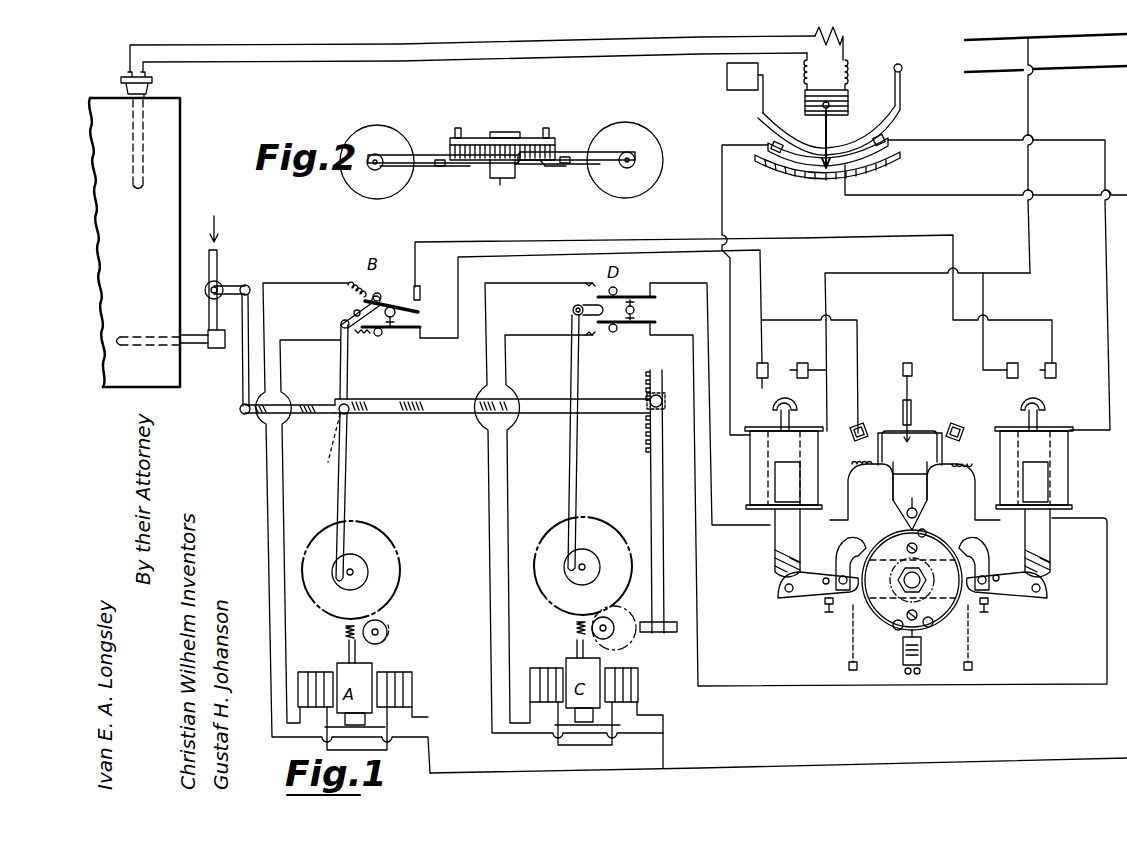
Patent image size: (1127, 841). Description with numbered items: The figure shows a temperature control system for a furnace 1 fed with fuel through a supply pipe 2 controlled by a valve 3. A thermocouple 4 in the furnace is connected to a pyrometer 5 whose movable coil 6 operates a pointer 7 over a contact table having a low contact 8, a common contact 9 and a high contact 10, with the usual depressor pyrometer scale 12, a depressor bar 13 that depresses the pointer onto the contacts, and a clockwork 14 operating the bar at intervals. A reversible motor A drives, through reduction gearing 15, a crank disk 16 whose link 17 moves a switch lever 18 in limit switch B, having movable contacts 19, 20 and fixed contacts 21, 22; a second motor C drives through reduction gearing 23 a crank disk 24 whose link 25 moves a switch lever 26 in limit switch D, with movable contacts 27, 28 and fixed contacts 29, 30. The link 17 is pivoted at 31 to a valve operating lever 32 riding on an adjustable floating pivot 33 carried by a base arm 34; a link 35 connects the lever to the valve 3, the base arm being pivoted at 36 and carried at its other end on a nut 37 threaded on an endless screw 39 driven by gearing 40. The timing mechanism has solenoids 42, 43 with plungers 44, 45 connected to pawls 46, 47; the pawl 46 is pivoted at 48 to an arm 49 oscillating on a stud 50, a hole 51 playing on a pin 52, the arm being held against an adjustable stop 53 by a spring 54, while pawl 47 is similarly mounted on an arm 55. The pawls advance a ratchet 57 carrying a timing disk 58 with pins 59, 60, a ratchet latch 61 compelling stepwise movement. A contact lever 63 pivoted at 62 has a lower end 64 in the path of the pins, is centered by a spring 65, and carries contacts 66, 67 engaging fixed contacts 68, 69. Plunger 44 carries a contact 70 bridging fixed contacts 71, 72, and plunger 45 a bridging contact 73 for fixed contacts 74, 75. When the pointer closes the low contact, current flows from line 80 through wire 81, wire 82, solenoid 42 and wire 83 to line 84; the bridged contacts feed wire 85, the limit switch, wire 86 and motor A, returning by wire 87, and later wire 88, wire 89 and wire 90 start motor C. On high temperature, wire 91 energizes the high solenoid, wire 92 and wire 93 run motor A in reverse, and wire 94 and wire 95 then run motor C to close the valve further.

In FIG. 1, the furnace 1 is at (134, 242).
In FIG. 1, the supply pipe 2 is at (219, 273).
In FIG. 1, the valve 3 is at (219, 283).
In FIG. 1, the thermocouple 4 is at (150, 143).
In FIG. 1, the pyrometer 5 is at (816, 71).
In FIG. 1, the movable coil 6 is at (839, 58).
In FIG. 1, the pointer 7 is at (833, 118).
In FIG. 1, the low contact 8 is at (785, 135).
In FIG. 1, the common contact 9 is at (782, 158).
In FIG. 1, the high contact 10 is at (880, 133).
In FIG. 1, the depressor pyrometer scale 12 is at (900, 160).
In FIG. 1, the depressor bar 13 is at (760, 114).
In FIG. 1, the clockwork 14 is at (742, 76).
In FIG. 1, the reduction gearing 15 is at (382, 626).
In FIG. 1, the crank disk 16 is at (365, 562).
In FIG. 1, the link 17 is at (348, 490).
In FIG. 1, the switch lever 18 is at (356, 308).
In FIG. 1, the movable contact 19 is at (405, 300).
In FIG. 1, the movable contact 20 is at (392, 330).
In FIG. 1, the fixed contact 21 is at (421, 292).
In FIG. 1, the fixed contact 22 is at (422, 334).
In FIG. 1, the reduction gearing 23 is at (576, 630).
In FIG. 1, the crank disk 24 is at (592, 558).
In FIG. 1, the link 25 is at (577, 465).
In FIG. 1, the switch lever 26 is at (574, 308).
In FIG. 1, the movable contact 27 is at (640, 295).
In FIG. 1, the movable contact 28 is at (638, 325).
In FIG. 1, the fixed contact 29 is at (655, 290).
In FIG. 1, the fixed contact 30 is at (655, 328).
In FIG. 1, the pivot 31 is at (350, 415).
In FIG. 1, the valve operating lever 32 is at (408, 416).
In FIG. 1, the adjustable floating pivot 33 is at (506, 415).
In FIG. 1, the base arm 34 is at (552, 402).
In FIG. 1, the link 35 is at (242, 374).
In FIG. 1, the pivot 36 is at (320, 440).
In FIG. 1, the nut 37 is at (660, 397).
In FIG. 1, the endless screw 39 is at (651, 498).
In FIG. 1, the gearing 40 is at (640, 635).
In FIG. 1, the solenoid 42 is at (750, 468).
In FIG. 2, the solenoid 42 is at (350, 145).
In FIG. 1, the solenoid 43 is at (1068, 468).
In FIG. 2, the solenoid 43 is at (650, 140).
In FIG. 1, the plunger 44 is at (775, 549).
In FIG. 2, the plunger 44 is at (368, 168).
In FIG. 1, the plunger 45 is at (1050, 549).
In FIG. 2, the plunger 45 is at (633, 165).
In FIG. 1, the pawl 46 is at (785, 596).
In FIG. 2, the pawl 46 is at (388, 152).
In FIG. 1, the pawl 47 is at (1040, 598).
In FIG. 2, the pawl 47 is at (605, 150).
In FIG. 1, the pivot 48 is at (840, 570).
In FIG. 2, the pivot 48 is at (440, 167).
In FIG. 1, the arm 49 is at (848, 600).
In FIG. 2, the arm 49 is at (464, 165).
In FIG. 1, the stud 50 is at (905, 580).
In FIG. 2, the stud 50 is at (500, 185).
In FIG. 1, the hole 51 is at (830, 590).
In FIG. 1, the pin 52 is at (823, 586).
In FIG. 2, the pin 52 is at (415, 150).
In FIG. 1, the adjustable stop 53 is at (828, 612).
In FIG. 1, the spring 54 is at (851, 645).
In FIG. 1, the arm 55 is at (982, 555).
In FIG. 2, the arm 55 is at (545, 168).
In FIG. 1, the ratchet 57 is at (932, 628).
In FIG. 2, the ratchet 57 is at (470, 140).
In FIG. 1, the timing disk 58 is at (897, 524).
In FIG. 2, the timing disk 58 is at (492, 140).
In FIG. 1, the pin 59 is at (895, 630).
In FIG. 2, the pin 59 is at (457, 134).
In FIG. 1, the pin 60 is at (925, 528).
In FIG. 2, the pin 60 is at (546, 130).
In FIG. 1, the ratchet latch 61 is at (903, 648).
In FIG. 1, the pivot 62 is at (910, 500).
In FIG. 1, the contact lever 63 is at (910, 480).
In FIG. 1, the lower end 64 is at (893, 520).
In FIG. 1, the spring 65 is at (909, 390).
In FIG. 1, the contact 66 is at (882, 432).
In FIG. 1, the contact 67 is at (937, 432).
In FIG. 1, the fixed contact 68 is at (856, 440).
In FIG. 1, the fixed contact 69 is at (957, 440).
In FIG. 1, the contact 70 is at (773, 404).
In FIG. 1, the fixed contact 71 is at (768, 365).
In FIG. 1, the fixed contact 72 is at (795, 365).
In FIG. 1, the bridging contact 73 is at (1045, 404).
In FIG. 1, the fixed contact 74 is at (1018, 368).
In FIG. 1, the fixed contact 75 is at (1056, 376).
In FIG. 1, the line 80 is at (1046, 155).
In FIG. 1, the wire 81 is at (986, 180).
In FIG. 1, the wire 82 is at (722, 216).
In FIG. 1, the wire 83 is at (927, 286).
In FIG. 1, the line 84 is at (965, 40).
In FIG. 1, the wire 85 is at (455, 338).
In FIG. 1, the wire 86 is at (284, 510).
In FIG. 1, the wire 87 is at (778, 759).
In FIG. 1, the wire 88 is at (848, 320).
In FIG. 1, the wire 89 is at (710, 404).
In FIG. 1, the wire 90 is at (490, 615).
In FIG. 1, the wire 91 is at (1107, 258).
In FIG. 1, the wire 92 is at (733, 290).
In FIG. 1, the wire 93 is at (268, 550).
In FIG. 1, the wire 94 is at (695, 578).
In FIG. 1, the wire 95 is at (520, 512).